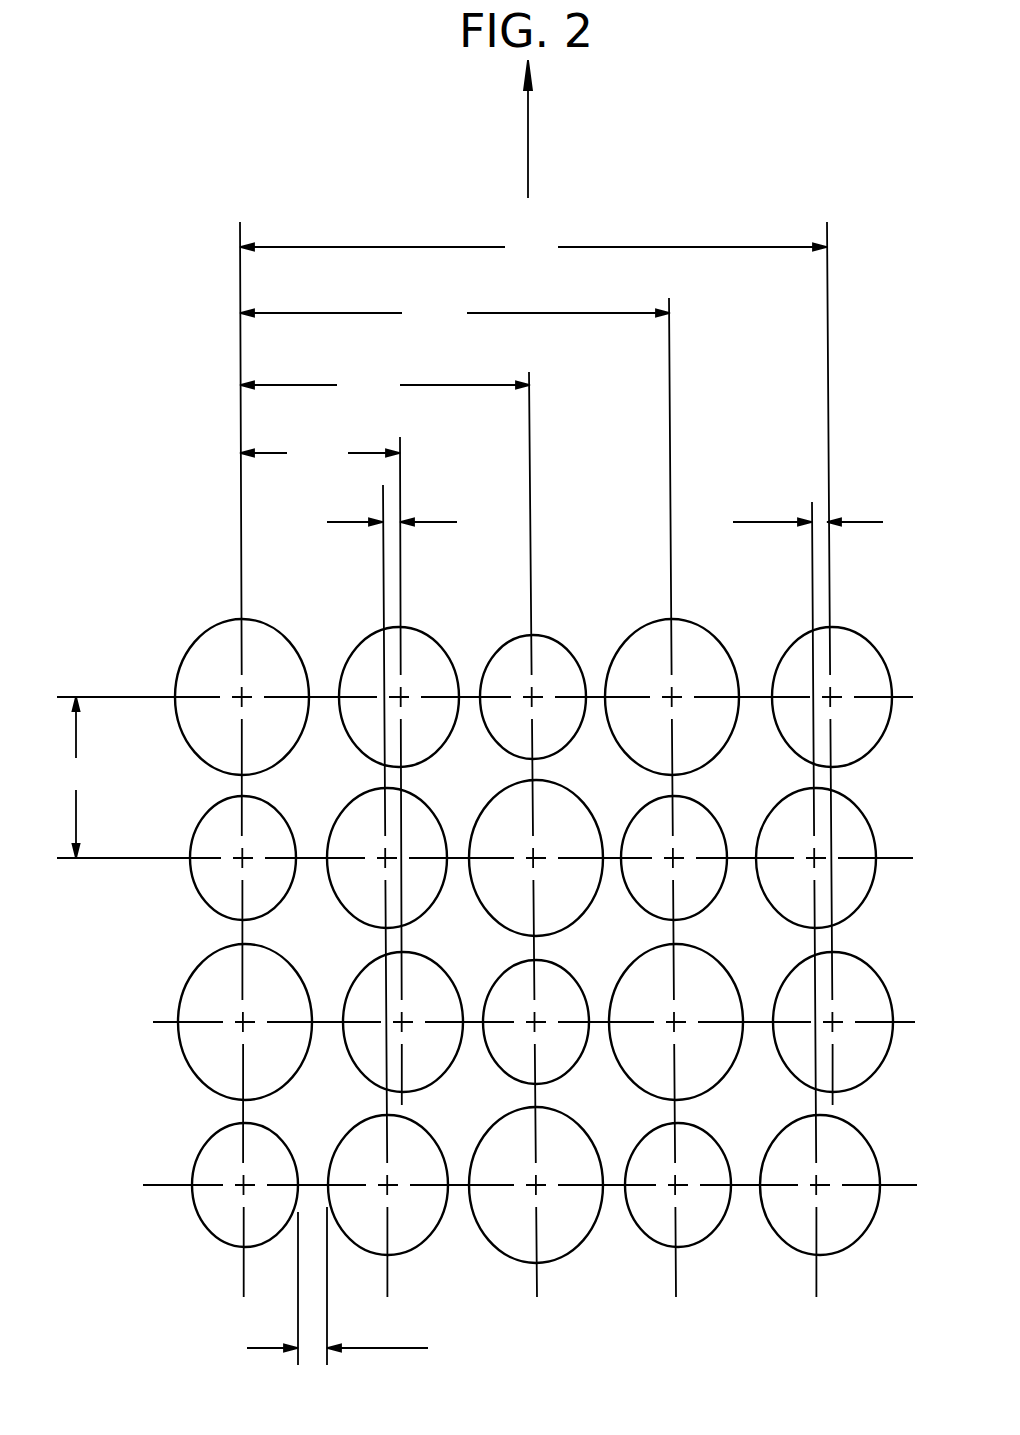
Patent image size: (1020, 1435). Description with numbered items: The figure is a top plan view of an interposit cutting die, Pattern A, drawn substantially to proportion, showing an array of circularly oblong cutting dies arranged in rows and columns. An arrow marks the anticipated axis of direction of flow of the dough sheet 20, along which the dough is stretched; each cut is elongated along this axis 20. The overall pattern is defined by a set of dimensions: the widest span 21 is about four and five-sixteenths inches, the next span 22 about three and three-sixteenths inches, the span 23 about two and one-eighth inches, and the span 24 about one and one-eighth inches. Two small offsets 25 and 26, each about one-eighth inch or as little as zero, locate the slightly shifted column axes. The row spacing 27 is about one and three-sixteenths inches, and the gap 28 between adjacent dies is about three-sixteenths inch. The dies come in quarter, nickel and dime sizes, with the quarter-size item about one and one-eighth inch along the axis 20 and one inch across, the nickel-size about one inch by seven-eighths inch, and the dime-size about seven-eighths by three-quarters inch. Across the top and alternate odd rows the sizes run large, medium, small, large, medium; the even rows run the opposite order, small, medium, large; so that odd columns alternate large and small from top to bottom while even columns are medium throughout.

The axis of direction of flow of the dough sheet 20 is at (528, 143).
The die pattern dimension 21 is at (533, 247).
The die pattern dimension 22 is at (455, 313).
The die pattern dimension 23 is at (385, 385).
The die pattern dimension 24 is at (320, 453).
The die pattern offset dimension 25 is at (412, 522).
The die pattern offset dimension 26 is at (789, 522).
The row spacing dimension 27 is at (76, 777).
The gap dimension 28 is at (361, 1286).